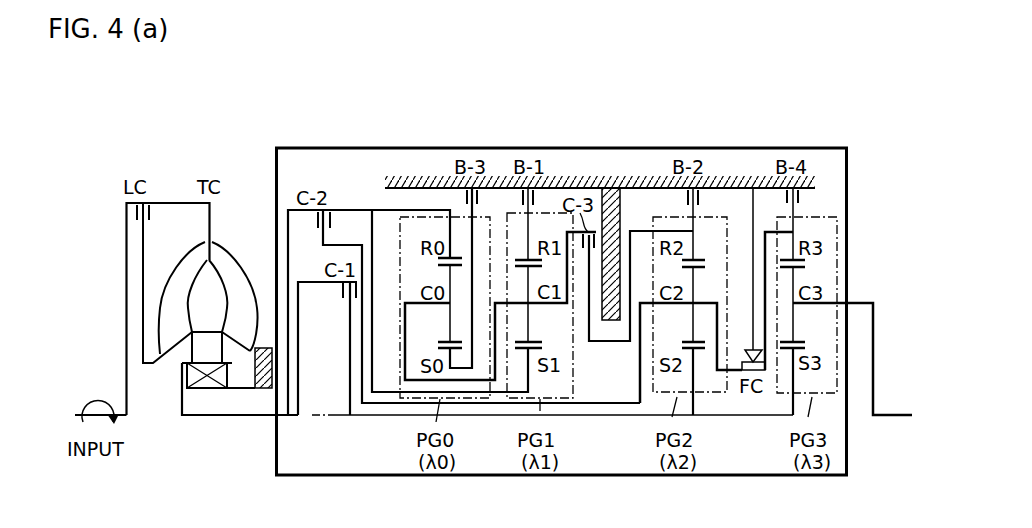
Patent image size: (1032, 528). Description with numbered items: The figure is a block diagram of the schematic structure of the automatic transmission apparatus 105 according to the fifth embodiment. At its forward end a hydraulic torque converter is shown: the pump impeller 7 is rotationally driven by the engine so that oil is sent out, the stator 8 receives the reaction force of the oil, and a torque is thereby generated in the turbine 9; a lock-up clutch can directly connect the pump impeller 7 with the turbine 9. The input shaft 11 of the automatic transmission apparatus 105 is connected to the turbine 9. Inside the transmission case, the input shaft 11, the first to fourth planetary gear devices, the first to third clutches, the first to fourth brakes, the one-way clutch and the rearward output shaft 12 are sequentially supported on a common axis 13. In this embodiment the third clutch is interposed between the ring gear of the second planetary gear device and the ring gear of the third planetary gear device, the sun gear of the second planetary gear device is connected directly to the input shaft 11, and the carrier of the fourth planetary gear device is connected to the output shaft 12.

The pump impeller 7 is at (232, 263).
The stator 8 is at (192, 347).
The turbine 9 is at (182, 263).
The input shaft 11 is at (235, 416).
The output shaft 12 is at (893, 418).
The common axis 13 is at (322, 417).
The automatic transmission apparatus 105 is at (593, 148).